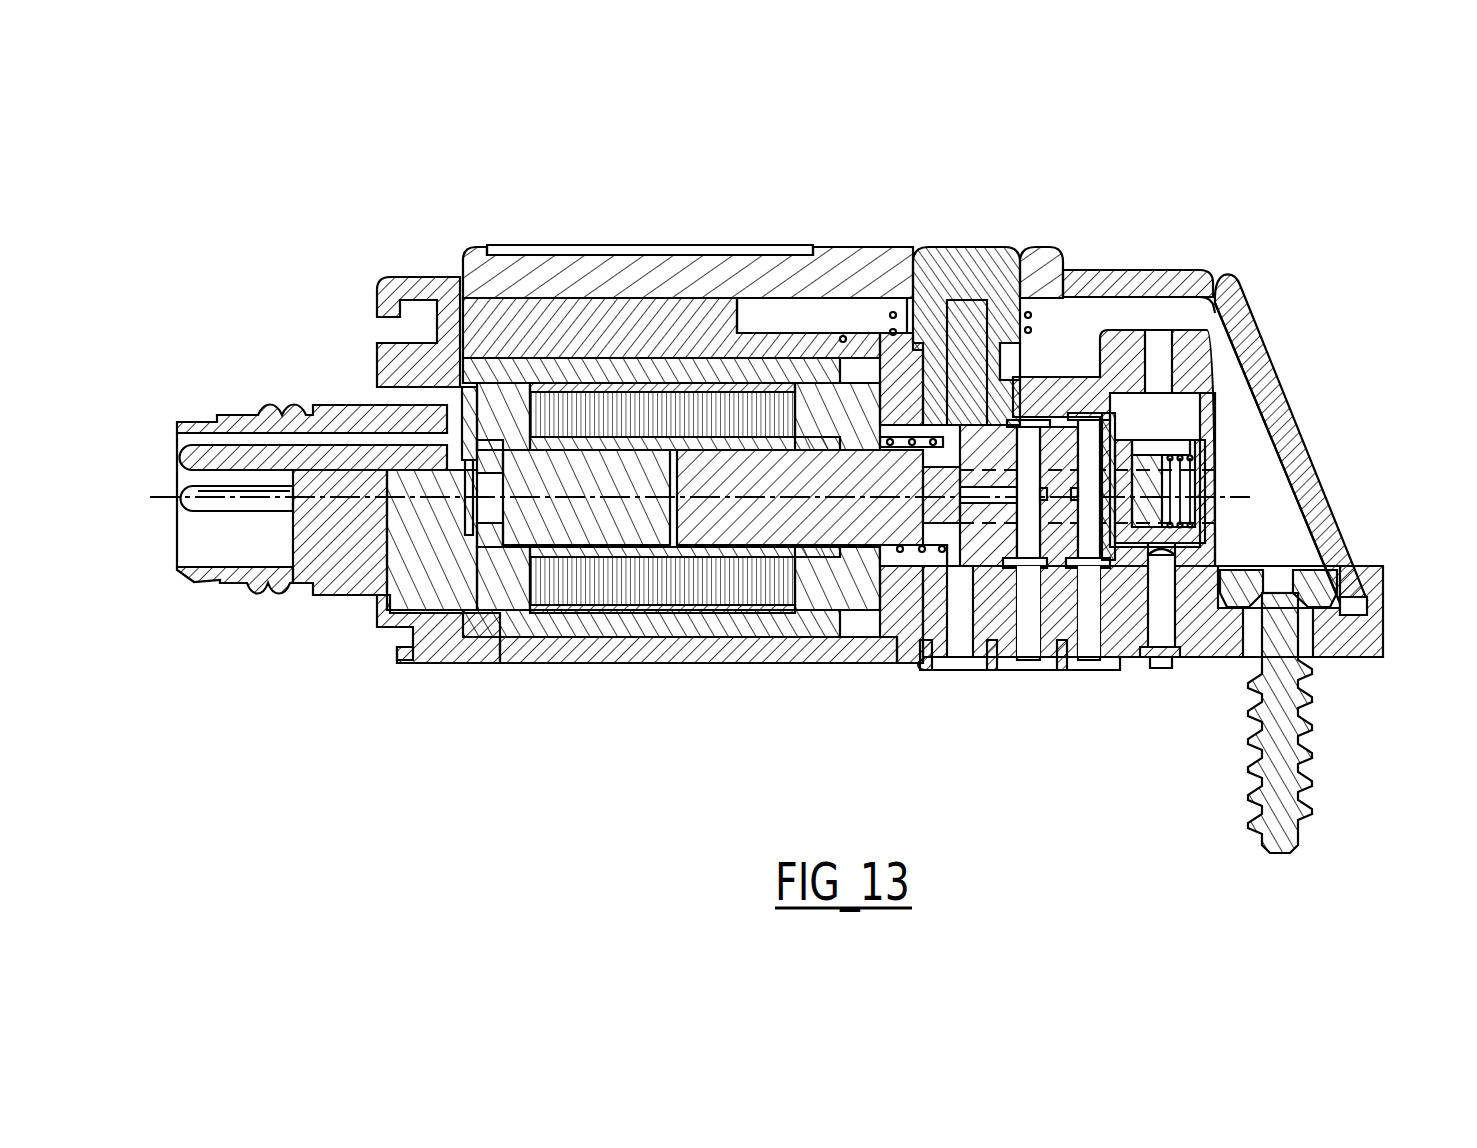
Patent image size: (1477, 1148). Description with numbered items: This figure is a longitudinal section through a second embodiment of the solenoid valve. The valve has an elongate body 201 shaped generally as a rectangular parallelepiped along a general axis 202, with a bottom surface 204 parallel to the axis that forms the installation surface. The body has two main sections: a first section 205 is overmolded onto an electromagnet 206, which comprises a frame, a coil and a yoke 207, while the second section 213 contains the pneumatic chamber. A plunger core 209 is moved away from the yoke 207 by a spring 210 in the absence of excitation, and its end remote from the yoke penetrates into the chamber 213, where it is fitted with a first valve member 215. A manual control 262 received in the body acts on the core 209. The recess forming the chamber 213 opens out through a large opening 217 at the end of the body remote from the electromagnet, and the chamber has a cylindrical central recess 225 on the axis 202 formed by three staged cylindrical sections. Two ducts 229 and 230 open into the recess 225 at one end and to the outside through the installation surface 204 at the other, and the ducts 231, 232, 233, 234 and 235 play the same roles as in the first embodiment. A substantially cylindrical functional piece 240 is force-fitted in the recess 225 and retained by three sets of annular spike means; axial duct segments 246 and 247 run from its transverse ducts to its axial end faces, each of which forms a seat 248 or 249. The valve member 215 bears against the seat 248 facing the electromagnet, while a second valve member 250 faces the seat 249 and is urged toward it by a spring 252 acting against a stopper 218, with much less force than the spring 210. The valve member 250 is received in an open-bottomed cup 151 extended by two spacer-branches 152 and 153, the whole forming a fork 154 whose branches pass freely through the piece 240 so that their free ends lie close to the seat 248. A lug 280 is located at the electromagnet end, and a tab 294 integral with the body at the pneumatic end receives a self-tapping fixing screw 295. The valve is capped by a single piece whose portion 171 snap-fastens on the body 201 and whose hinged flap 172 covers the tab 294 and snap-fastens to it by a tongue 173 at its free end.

The open-bottomed cup 151 is at (1195, 547).
The spacer-branch 152 is at (1080, 261).
The spacer-branch 153 is at (1044, 410).
The fork 154 is at (1140, 160).
The portion 171 is at (607, 275).
The flap 172 is at (1236, 346).
The tongue 173 is at (1362, 603).
The body 201 is at (430, 292).
The general axis 202 is at (183, 452).
The bottom surface 204 is at (700, 668).
The first section 205 is at (702, 320).
The electromagnet 206 is at (593, 623).
The yoke 207 is at (553, 517).
The plunger core 209 is at (796, 518).
The spring 210 is at (893, 395).
The second section / pneumatic chamber 213 is at (1053, 375).
The first valve member 215 is at (900, 660).
The large opening 217 is at (1258, 358).
The stopper 218 is at (1210, 443).
The cylindrical central recess 225 is at (1160, 312).
The duct 229 is at (1033, 642).
The duct 230 is at (1100, 658).
The duct 231 is at (967, 645).
The duct 232 is at (1019, 720).
The duct 233 is at (1172, 640).
The duct 234 is at (1166, 713).
The duct 235 is at (1171, 736).
The functional piece 240 is at (1258, 358).
The axial duct segment 246 is at (982, 488).
The axial duct segment 247 is at (1213, 330).
The seat 248 is at (963, 480).
The seat 249 is at (1195, 472).
The second valve member 250 is at (1195, 525).
The spring 252 is at (1193, 503).
The manual control 262 is at (927, 292).
The lug 280 is at (397, 652).
The tab 294 is at (1333, 650).
The self-tapping fixing screw 295 is at (1287, 780).